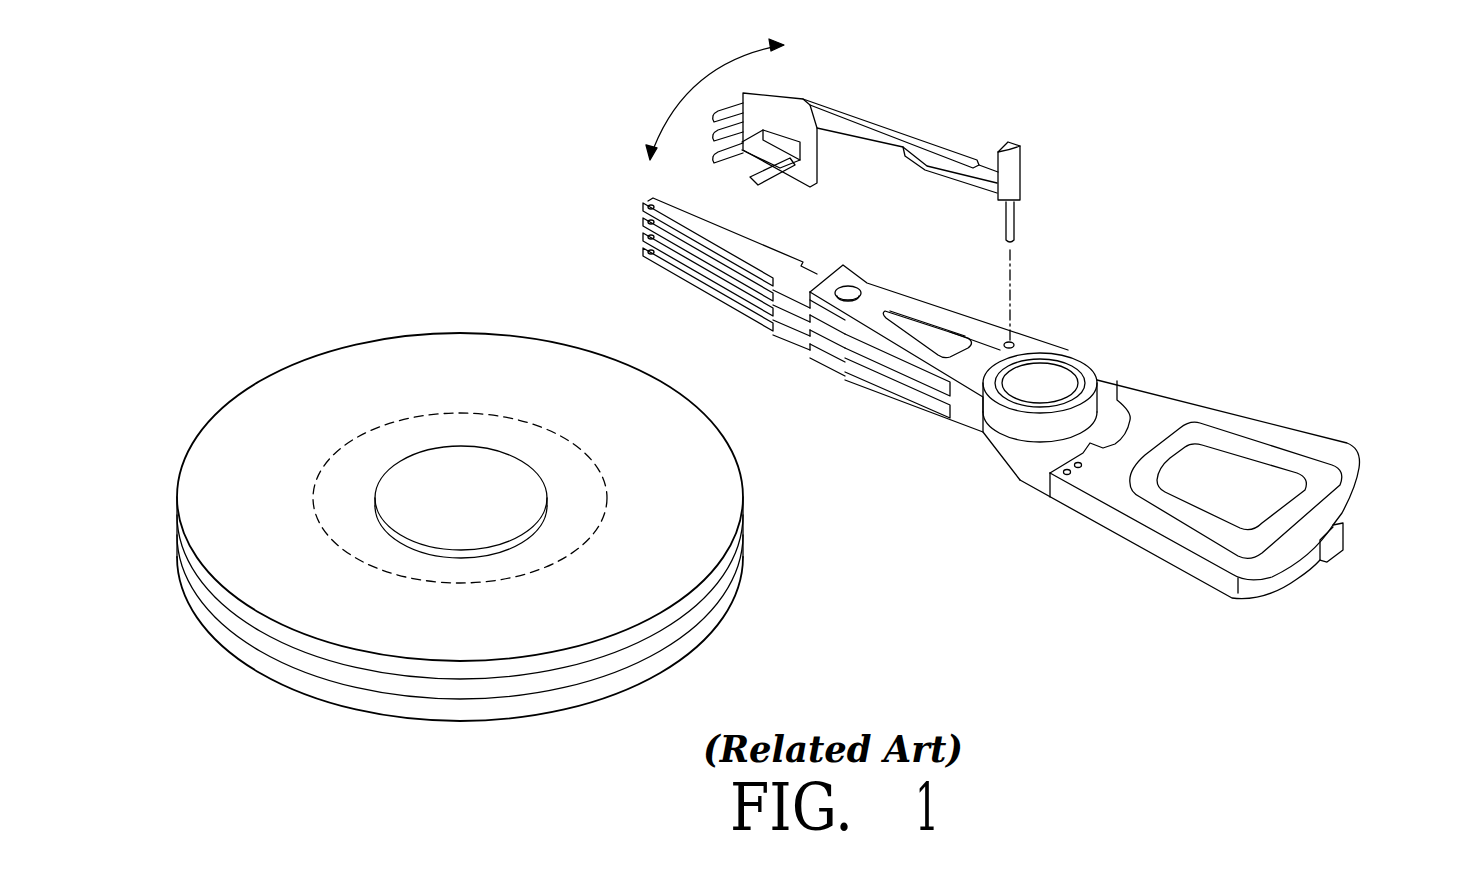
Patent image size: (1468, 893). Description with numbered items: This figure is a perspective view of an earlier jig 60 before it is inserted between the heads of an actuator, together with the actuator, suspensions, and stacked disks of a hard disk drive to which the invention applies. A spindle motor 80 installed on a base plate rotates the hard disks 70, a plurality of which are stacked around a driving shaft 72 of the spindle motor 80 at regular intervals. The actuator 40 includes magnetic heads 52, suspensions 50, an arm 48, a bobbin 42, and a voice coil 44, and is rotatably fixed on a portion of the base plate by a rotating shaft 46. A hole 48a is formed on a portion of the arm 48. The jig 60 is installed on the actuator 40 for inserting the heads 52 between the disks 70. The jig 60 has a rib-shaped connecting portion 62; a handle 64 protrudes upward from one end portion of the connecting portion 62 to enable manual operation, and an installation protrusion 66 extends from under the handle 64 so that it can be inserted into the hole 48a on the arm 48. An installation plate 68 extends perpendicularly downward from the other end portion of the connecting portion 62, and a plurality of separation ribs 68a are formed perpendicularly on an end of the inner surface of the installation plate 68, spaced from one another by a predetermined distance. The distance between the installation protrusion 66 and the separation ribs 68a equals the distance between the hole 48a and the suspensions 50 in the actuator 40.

The actuator 40 is at (1241, 462).
The bobbin 42 is at (1347, 478).
The voice coil 44 is at (1316, 505).
The rotating shaft 46 is at (1050, 373).
The arm 48 is at (993, 340).
The hole 48a is at (1012, 342).
The suspensions 50 is at (817, 277).
The magnetic heads 52 is at (645, 208).
The jig 60 is at (878, 121).
The connecting portion 62 is at (880, 127).
The handle 64 is at (1017, 163).
The installation protrusion 66 is at (1010, 220).
The installation plate 68 is at (733, 101).
The separation ribs 68a is at (722, 107).
The disks 70 is at (252, 601).
The driving shaft 72 is at (428, 432).
The spindle motor 80 is at (500, 482).